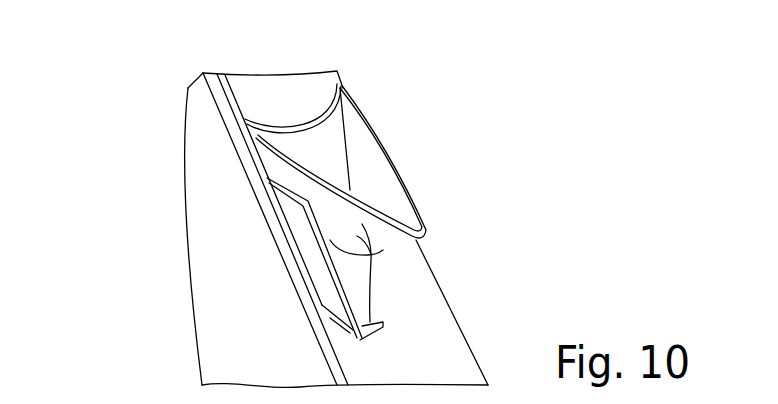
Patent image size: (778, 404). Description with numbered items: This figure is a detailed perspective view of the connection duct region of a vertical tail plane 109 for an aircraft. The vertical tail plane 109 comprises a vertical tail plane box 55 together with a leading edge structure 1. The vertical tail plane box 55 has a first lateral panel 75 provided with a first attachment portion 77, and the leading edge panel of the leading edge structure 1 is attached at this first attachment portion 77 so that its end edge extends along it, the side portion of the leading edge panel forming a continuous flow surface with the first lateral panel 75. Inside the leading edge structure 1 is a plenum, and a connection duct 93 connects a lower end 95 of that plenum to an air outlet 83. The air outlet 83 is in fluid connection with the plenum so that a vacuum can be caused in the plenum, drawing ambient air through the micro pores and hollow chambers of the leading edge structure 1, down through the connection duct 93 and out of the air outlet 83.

The leading edge structure 1 is at (291, 111).
The vertical tail plane box 55 is at (235, 200).
The first lateral panel 75 is at (218, 92).
The first attachment portion 77 is at (200, 229).
The air outlet 83 is at (303, 235).
The connection duct 93 is at (383, 250).
The lower end of the plenum 95 is at (352, 132).
The vertical tail plane 109 is at (452, 95).